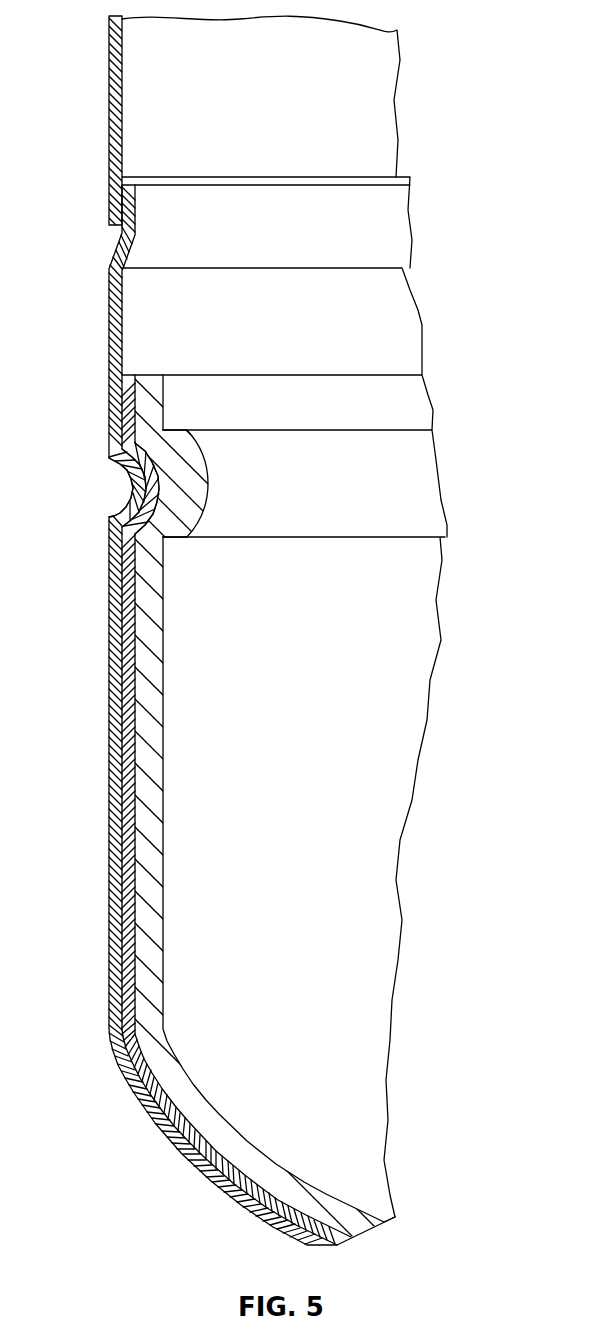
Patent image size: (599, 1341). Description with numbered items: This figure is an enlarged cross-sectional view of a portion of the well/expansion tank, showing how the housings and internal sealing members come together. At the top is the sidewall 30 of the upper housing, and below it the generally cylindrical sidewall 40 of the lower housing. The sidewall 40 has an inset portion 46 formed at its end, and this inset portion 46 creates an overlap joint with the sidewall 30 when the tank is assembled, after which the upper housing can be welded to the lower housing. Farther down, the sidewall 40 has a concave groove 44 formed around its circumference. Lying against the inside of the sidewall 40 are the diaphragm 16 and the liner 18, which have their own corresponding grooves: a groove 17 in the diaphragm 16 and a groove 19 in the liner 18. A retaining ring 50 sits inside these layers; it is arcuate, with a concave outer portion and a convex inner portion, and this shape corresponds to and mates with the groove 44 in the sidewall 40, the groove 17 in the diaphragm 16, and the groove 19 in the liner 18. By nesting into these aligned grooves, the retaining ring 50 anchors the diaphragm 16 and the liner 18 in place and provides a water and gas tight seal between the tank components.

The sidewall 30 is at (110, 90).
The inset portion 46 is at (150, 222).
The side wall 40 is at (117, 940).
The liner 18 is at (128, 967).
The diaphragm 16 is at (157, 893).
The retaining ring 50 is at (418, 474).
The concave groove 44 is at (136, 491).
The groove 19 is at (150, 470).
The groove 17 is at (152, 445).